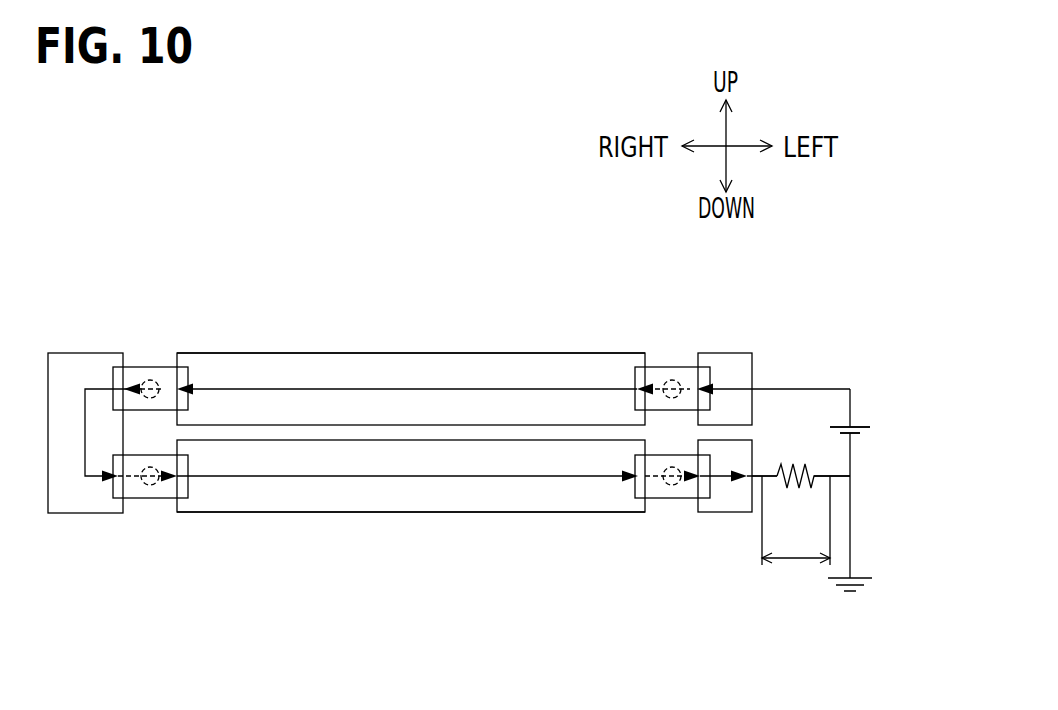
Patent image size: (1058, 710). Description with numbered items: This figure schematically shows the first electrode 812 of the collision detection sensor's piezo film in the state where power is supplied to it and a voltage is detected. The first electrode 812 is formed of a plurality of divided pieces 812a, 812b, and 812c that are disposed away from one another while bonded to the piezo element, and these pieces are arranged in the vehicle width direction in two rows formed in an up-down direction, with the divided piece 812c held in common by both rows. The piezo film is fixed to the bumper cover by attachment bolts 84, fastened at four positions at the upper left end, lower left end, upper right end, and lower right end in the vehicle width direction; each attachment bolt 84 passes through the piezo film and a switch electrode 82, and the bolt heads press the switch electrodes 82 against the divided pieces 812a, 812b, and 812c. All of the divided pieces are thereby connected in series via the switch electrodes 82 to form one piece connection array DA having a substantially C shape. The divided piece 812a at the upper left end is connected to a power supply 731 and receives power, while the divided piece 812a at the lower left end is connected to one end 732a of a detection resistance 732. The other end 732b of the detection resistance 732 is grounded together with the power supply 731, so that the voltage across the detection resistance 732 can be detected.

The piece connection array DA is at (374, 215).
The divided piece 812c is at (97, 353).
The first electrode 812 is at (341, 340).
The divided piece 812b is at (443, 353).
The divided piece 812a is at (718, 353).
The switch electrode 82 is at (145, 367).
The attachment bolt 84 is at (143, 383).
The detection resistance 732 is at (785, 428).
The one end of detection resistance 732a is at (757, 477).
The other end of detection resistance 732b is at (830, 476).
The power supply 731 is at (872, 404).